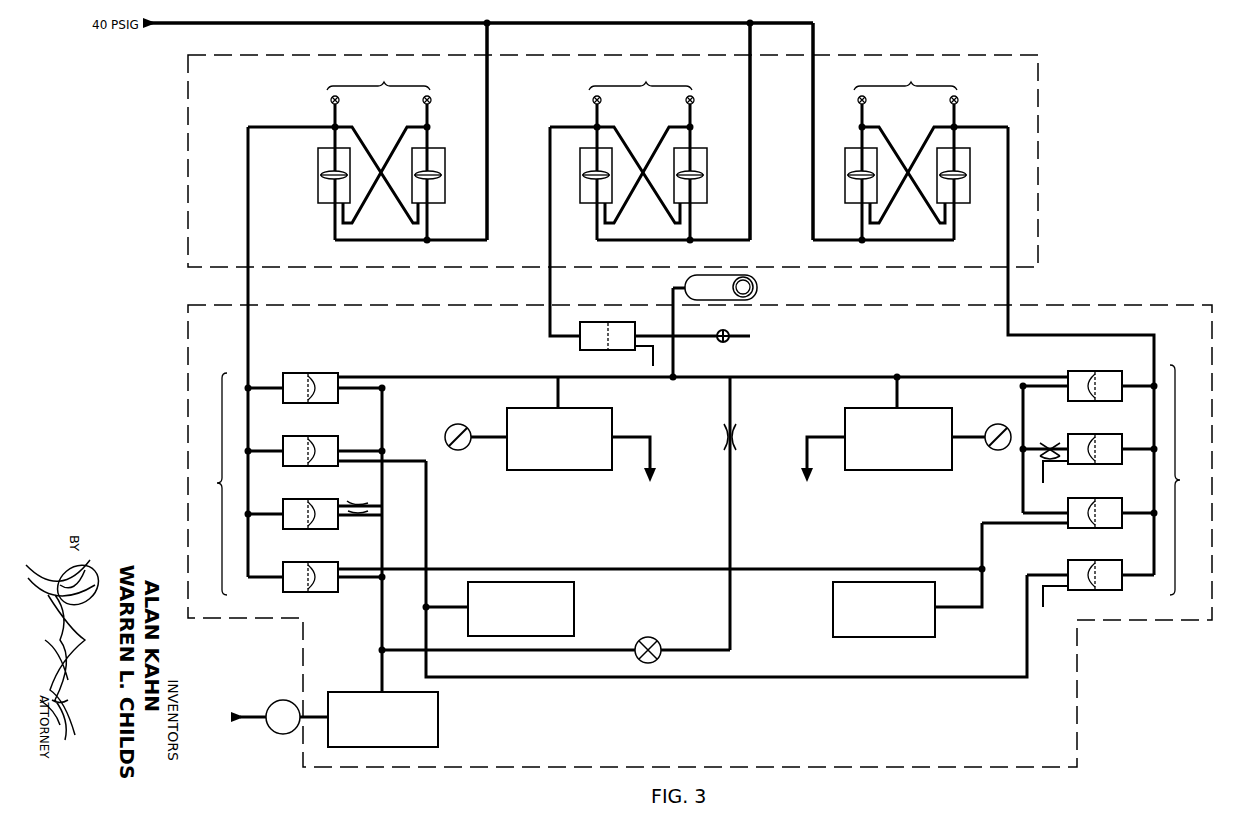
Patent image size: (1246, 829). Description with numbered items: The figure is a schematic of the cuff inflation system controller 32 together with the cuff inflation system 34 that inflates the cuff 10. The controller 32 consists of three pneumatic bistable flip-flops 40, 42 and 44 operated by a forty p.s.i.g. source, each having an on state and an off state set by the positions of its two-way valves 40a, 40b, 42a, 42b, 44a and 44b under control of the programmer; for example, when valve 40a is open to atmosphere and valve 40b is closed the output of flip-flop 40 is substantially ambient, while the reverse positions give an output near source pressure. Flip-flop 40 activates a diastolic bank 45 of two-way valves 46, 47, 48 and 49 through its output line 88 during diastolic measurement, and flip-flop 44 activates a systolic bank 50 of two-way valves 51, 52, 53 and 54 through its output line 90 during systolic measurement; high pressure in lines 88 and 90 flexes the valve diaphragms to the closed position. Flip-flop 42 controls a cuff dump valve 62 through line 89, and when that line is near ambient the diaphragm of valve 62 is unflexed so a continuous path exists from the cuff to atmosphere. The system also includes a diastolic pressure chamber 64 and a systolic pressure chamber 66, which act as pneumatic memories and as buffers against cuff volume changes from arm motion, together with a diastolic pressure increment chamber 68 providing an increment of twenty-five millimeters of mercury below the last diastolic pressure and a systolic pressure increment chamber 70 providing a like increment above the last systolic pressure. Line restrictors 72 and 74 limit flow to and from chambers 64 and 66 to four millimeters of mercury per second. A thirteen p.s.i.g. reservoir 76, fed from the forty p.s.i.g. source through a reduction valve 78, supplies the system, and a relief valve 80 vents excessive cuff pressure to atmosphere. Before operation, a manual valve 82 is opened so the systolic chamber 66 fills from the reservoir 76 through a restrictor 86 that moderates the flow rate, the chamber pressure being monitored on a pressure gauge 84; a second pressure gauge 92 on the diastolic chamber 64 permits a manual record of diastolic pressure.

The cuff 10 is at (757, 287).
The cuff inflation system controller 32 is at (1040, 132).
The cuff inflation system 34 is at (1052, 300).
The pneumatic bistable flip-flop 40 is at (314, 115).
The two-way valve 40a is at (339, 100).
The two-way valve 40b is at (431, 100).
The pneumatic bistable flip-flop 42 is at (568, 112).
The two-way valve 42a is at (601, 100).
The two-way valve 42b is at (694, 100).
The pneumatic bistable flip-flop 44 is at (995, 114).
The two-way valve 44a is at (866, 100).
The two-way valve 44b is at (958, 100).
The diastolic bank 45 is at (217, 484).
The two-way valve 46 is at (315, 372).
The two-way valve 47 is at (315, 435).
The two-way valve 48 is at (315, 498).
The two-way valve 49 is at (313, 561).
The systolic bank 50 is at (1180, 480).
The two-way valve 51 is at (1100, 370).
The two-way valve 52 is at (1100, 433).
The two-way valve 53 is at (1100, 497).
The two-way valve 54 is at (1100, 559).
The cuff dump valve 62 is at (578, 340).
The diastolic pressure chamber 64 is at (608, 407).
The systolic pressure chamber 66 is at (843, 412).
The diastolic pressure increment chamber 68 is at (576, 612).
The systolic pressure increment chamber 70 is at (831, 609).
The line restrictor 72 is at (370, 512).
The line restrictor 74 is at (1044, 437).
The 13 p.s.i.g. reservoir 76 is at (440, 723).
The reduction valve 78 is at (275, 700).
The relief valve 80 is at (727, 342).
The manual valve 82 is at (658, 641).
The pressure gauge 84 is at (991, 425).
The restrictor 86 is at (740, 434).
The output line 88 is at (250, 236).
The output line 89 is at (548, 236).
The output line 90 is at (1006, 236).
The pressure gauge 92 is at (458, 424).